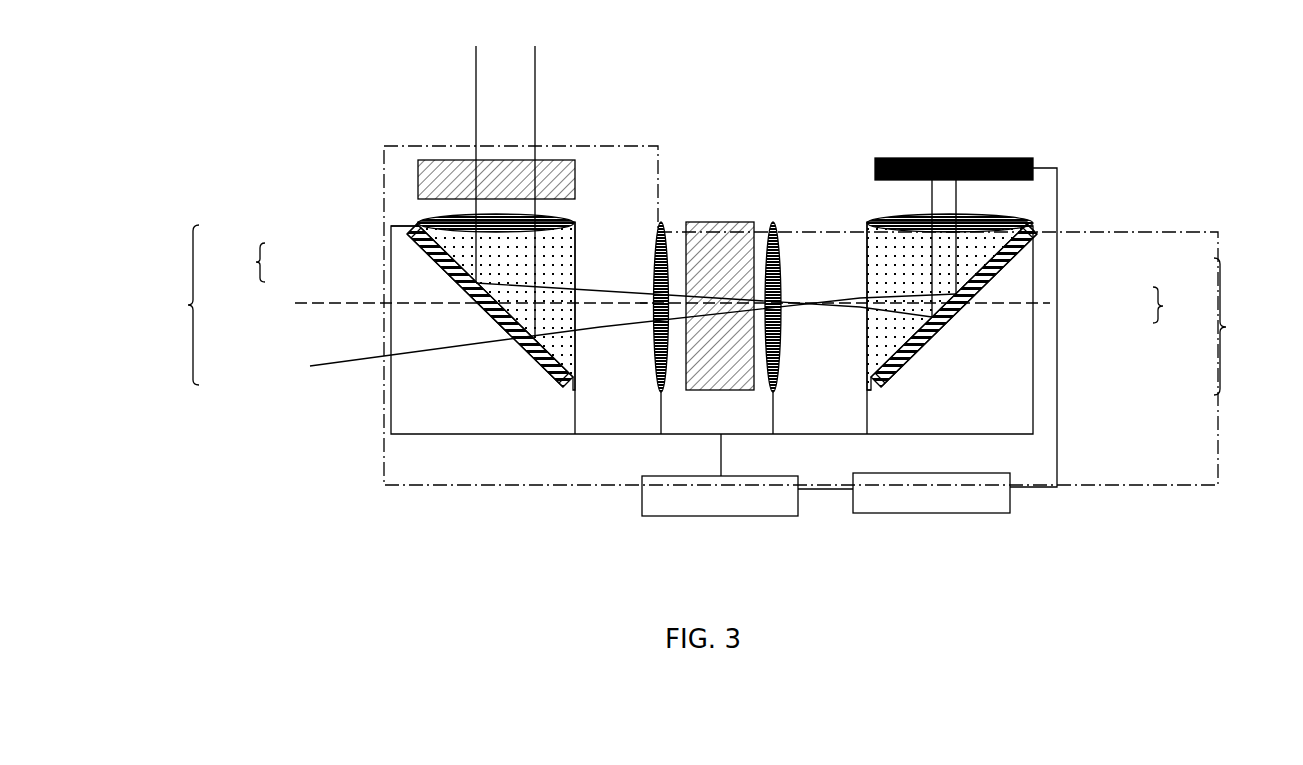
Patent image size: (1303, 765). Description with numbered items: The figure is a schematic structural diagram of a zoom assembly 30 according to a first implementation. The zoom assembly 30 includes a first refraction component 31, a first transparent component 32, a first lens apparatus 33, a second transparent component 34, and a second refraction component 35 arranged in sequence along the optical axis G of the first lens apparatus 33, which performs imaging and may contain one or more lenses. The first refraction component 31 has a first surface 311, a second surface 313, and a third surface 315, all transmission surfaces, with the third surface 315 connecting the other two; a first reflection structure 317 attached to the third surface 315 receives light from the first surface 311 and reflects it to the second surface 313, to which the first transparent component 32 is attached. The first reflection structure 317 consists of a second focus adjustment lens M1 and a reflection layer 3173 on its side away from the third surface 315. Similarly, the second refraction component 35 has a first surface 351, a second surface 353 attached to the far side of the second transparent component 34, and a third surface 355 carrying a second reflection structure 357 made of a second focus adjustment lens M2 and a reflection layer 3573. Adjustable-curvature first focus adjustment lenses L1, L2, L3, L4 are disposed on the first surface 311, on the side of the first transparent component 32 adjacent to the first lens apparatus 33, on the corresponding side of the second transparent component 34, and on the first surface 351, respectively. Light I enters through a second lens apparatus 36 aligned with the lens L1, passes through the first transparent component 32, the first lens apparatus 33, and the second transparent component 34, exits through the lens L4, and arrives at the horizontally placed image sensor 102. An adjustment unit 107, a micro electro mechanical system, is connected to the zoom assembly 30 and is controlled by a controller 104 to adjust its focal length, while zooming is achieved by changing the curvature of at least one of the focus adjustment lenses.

The zoom assembly 30 is at (362, 169).
The second lens apparatus 36 is at (448, 177).
The light I is at (535, 87).
The first refraction component 31 is at (552, 254).
The first surface 311 is at (418, 225).
The first focus adjustment lens L1 is at (418, 226).
The first transparent component 32 is at (607, 248).
The first reflection structure 317 is at (390, 305).
The reflection layer 3173 is at (440, 260).
The second focus adjustment lens M1 is at (462, 288).
The third surface 315 is at (472, 300).
The second surface 313 is at (310, 366).
The first focus adjustment lens L2 is at (663, 222).
The first lens apparatus 33 is at (715, 243).
The first focus adjustment lens L3 is at (773, 220).
The second transparent component 34 is at (840, 230).
The image sensor 102 is at (1016, 160).
The first focus adjustment lens L4 is at (1010, 220).
The second refraction component 35 is at (1060, 316).
The first surface 351 is at (1040, 236).
The second reflection structure 357 is at (1040, 305).
The second focus adjustment lens M2 is at (993, 277).
The reflection layer 3573 is at (1000, 283).
The third surface 355 is at (960, 309).
The second surface 353 is at (867, 322).
The optical axis G is at (643, 303).
The adjustment unit 107 is at (698, 516).
The controller 104 is at (900, 513).